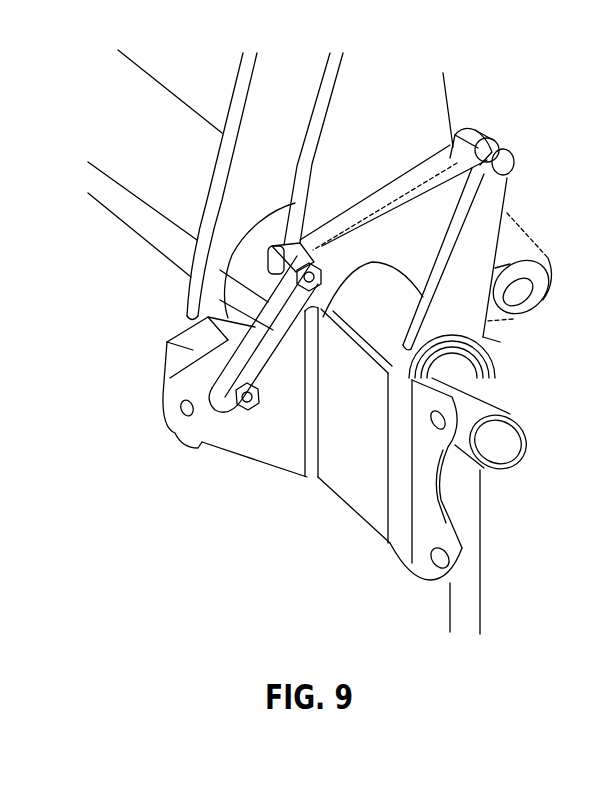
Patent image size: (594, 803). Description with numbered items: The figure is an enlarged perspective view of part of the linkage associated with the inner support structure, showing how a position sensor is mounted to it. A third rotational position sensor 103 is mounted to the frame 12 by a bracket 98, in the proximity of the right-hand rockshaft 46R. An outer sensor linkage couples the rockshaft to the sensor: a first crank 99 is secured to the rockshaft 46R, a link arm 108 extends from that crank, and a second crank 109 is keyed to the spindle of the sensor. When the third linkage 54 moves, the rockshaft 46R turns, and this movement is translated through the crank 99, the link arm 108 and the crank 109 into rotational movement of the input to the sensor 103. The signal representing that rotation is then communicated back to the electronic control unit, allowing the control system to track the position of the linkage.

The right-hand rockshaft 46R is at (168, 115).
The link arm 108 is at (452, 158).
The first crank 99 is at (485, 213).
The second crank 109 is at (252, 322).
The third rotational position sensor 103 is at (177, 343).
The bracket 98 is at (275, 440).
The frame 12 is at (347, 503).
The third linkage 54 is at (470, 520).